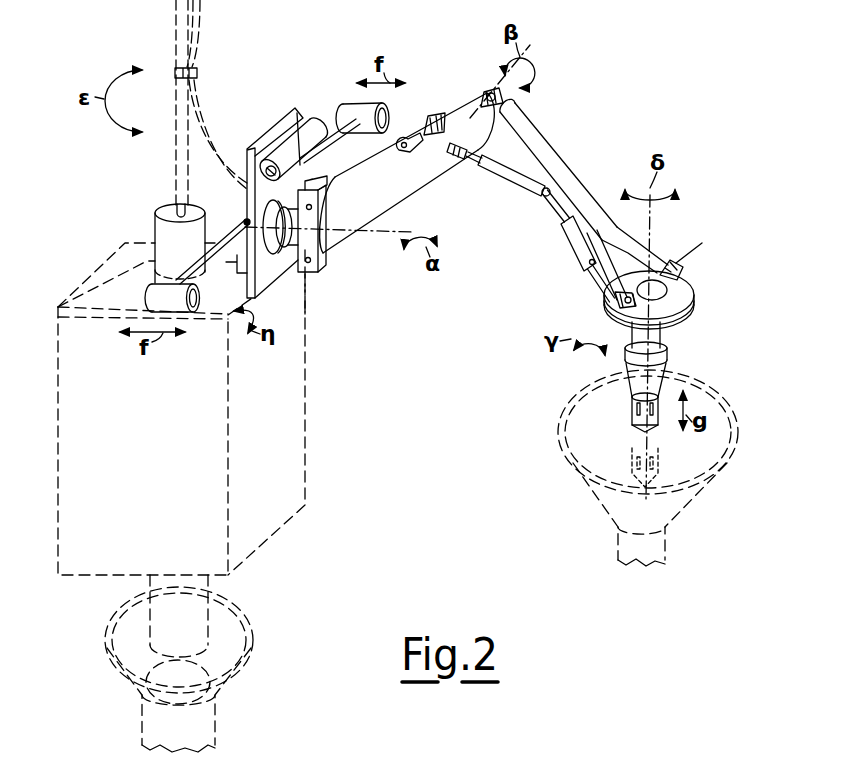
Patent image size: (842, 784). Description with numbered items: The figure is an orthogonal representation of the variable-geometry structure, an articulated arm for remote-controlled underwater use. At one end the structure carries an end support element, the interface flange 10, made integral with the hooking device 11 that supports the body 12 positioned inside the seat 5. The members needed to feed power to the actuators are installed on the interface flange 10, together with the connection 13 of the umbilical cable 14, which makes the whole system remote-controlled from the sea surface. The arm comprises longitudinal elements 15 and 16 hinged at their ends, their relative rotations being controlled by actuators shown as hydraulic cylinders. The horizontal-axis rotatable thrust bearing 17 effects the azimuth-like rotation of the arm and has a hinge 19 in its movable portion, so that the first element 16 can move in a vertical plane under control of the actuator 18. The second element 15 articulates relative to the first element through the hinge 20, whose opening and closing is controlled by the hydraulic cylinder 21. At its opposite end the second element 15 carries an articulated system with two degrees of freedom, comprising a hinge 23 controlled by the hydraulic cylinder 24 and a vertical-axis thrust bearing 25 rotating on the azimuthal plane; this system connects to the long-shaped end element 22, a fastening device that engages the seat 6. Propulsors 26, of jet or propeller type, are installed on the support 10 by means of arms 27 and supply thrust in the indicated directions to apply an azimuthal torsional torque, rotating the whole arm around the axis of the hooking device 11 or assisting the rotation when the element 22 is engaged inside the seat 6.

The seat 5 is at (213, 733).
The seat 6 is at (627, 542).
The interface flange 10 is at (247, 197).
The hooking device 11 is at (155, 222).
The body 12 is at (300, 468).
The connection 13 is at (287, 150).
The umbilical cable 14 is at (201, 32).
The second longitudinal element 15 is at (535, 150).
The first longitudinal element 16 is at (400, 187).
The horizontal-axis thrust bearing 17 is at (280, 253).
The actuator 18 is at (400, 152).
The hinge 19 is at (311, 260).
The hinge 20 is at (483, 99).
The hydraulic cylinder 21 is at (503, 175).
The end element 22 is at (672, 373).
The hinge 23 is at (671, 262).
The hydraulic cylinder 24 is at (563, 227).
The vertical-axis thrust bearing 25 is at (678, 300).
The propulsor 26 is at (350, 107).
The arm 27 is at (333, 138).